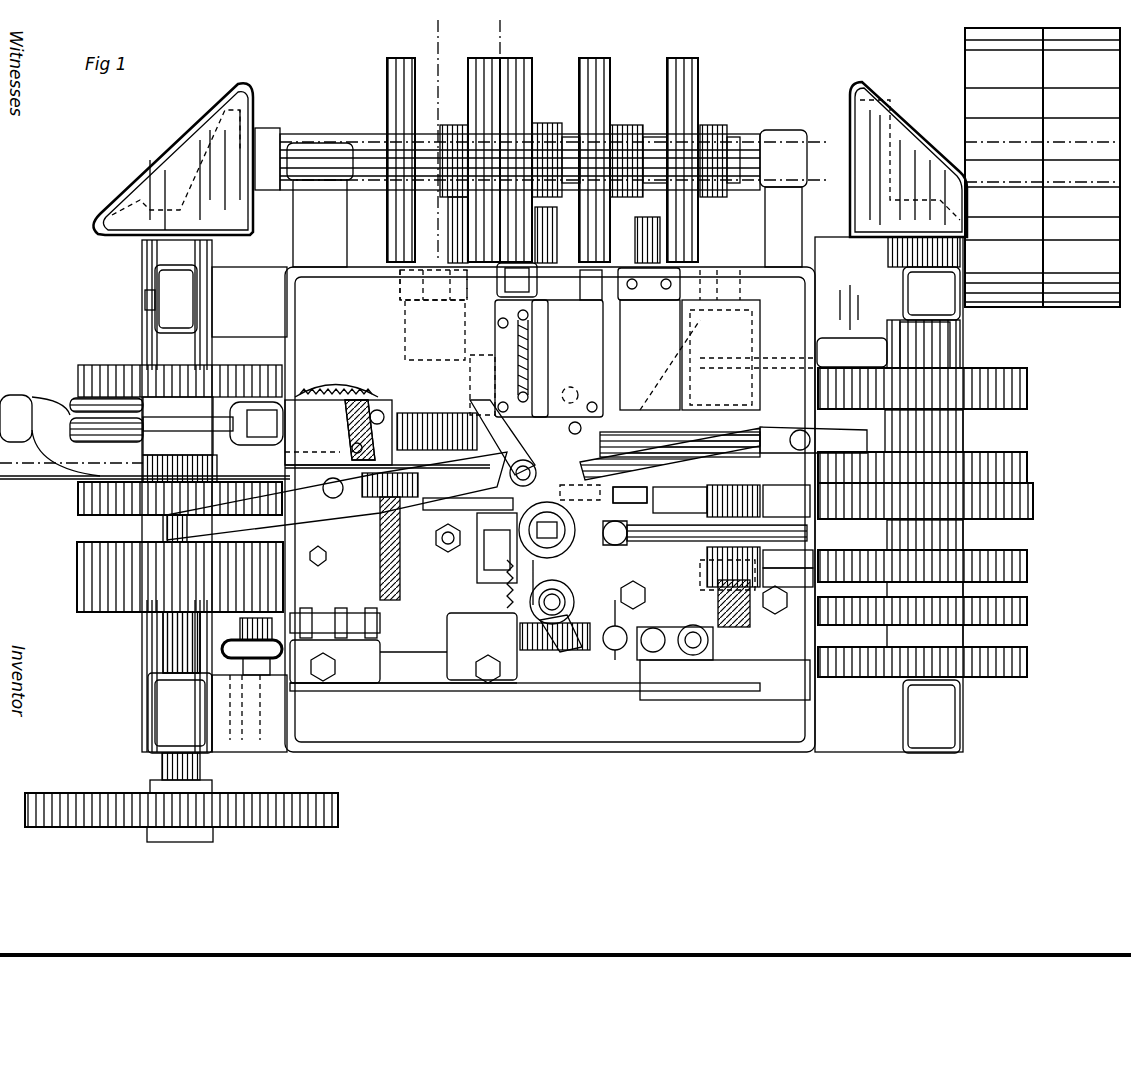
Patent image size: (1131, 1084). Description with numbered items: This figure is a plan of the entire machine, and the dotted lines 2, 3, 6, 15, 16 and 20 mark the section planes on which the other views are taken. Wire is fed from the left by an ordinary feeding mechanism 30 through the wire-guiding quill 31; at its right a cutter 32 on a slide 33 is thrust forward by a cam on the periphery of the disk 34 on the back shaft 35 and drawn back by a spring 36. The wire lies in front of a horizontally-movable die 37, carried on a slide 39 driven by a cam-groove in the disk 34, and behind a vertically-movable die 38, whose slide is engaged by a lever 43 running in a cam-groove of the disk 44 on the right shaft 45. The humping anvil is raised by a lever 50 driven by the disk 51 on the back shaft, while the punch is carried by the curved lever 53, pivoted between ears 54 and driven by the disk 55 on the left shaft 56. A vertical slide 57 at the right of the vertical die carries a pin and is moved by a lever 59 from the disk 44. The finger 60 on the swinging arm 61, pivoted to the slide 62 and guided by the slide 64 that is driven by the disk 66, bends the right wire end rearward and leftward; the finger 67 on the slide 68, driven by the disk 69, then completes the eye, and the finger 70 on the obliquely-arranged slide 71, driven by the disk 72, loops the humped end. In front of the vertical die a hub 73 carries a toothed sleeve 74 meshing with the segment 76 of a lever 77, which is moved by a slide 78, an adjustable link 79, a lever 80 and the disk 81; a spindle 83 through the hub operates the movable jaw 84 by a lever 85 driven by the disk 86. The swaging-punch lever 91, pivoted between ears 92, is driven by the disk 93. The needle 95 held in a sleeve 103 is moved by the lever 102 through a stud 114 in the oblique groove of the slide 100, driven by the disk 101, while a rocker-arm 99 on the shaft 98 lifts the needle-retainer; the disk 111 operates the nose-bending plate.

The dotted line 2 is at (1068, 522).
The dotted line 3 is at (375, 35).
The dotted line 6 is at (455, 35).
The dotted line 15 is at (600, 710).
The dotted line 16 is at (1105, 623).
The section line 20 is at (1068, 725).
The feeding mechanism 30 is at (373, 424).
The wire-guiding quill 31 is at (437, 431).
The cutter 32 is at (480, 412).
The slide 33 is at (510, 382).
The disk 34 is at (516, 160).
The shaft 35 is at (655, 140).
The spring 36 is at (535, 350).
The horizontally-movable die 37 is at (568, 385).
The vertically-movable die 38 is at (522, 486).
The slide 39 is at (558, 215).
The lever 43 is at (800, 358).
The disk 44 is at (922, 388).
The shaft 45 is at (950, 341).
The lever 50 is at (448, 222).
The disk 51 is at (484, 160).
The lever 53 is at (360, 527).
The ears 54 is at (362, 558).
The disk 55 is at (180, 577).
The shaft 56 is at (163, 540).
The vertical slide 57 is at (580, 496).
The lever 59 is at (745, 365).
The finger 60 is at (605, 445).
The swinging arm 61 is at (813, 472).
The slide 62 is at (852, 352).
The slide 64 is at (635, 238).
The disk 66 is at (682, 160).
The finger 67 is at (580, 420).
The slide 68 is at (546, 346).
The disk 69 is at (594, 160).
The finger 70 is at (450, 552).
The obliquely-arranged slide 71 is at (305, 610).
The disk 72 is at (180, 498).
The hub 73 is at (499, 548).
The sleeve 74 is at (547, 530).
The segment 76 is at (502, 587).
The lever 77 is at (568, 653).
The slide 78 is at (525, 670).
The adjustable link 79 is at (398, 672).
The lever 80 is at (290, 670).
The disk 81 is at (181, 630).
The spindle 83 is at (922, 467).
The movable jaw 84 is at (608, 522).
The lever 85 is at (788, 576).
The disk 86 is at (922, 611).
The lever 91 is at (680, 545).
The ears 92 is at (712, 498).
The disk 93 is at (925, 501).
The needle 95 is at (560, 584).
The shaft 98 is at (710, 648).
The rocker-arm 99 is at (780, 612).
The slide 100 is at (790, 664).
The disk 101 is at (922, 662).
The lever 102 is at (690, 658).
The sleeve 103 is at (610, 652).
The disk 111 is at (922, 566).
The stud 114 is at (653, 655).